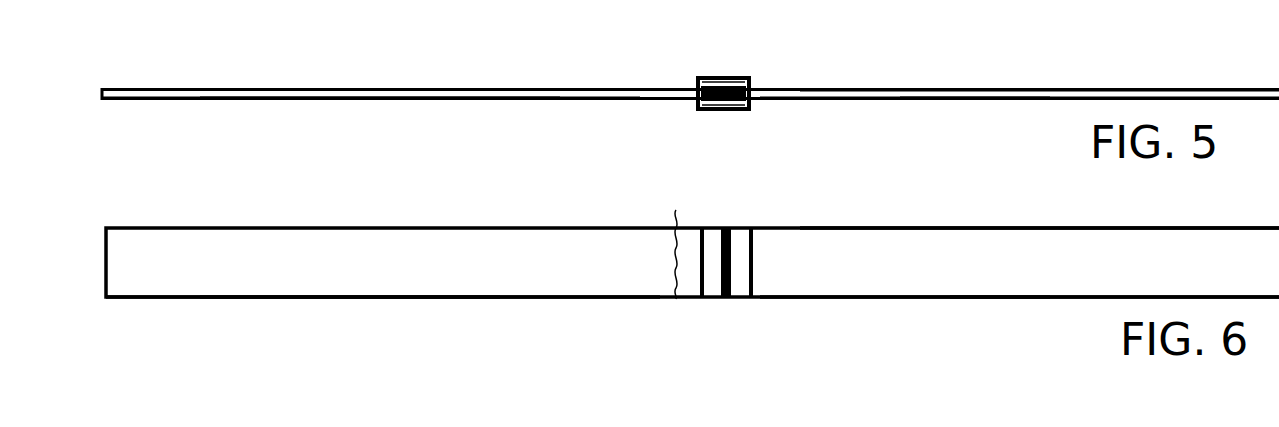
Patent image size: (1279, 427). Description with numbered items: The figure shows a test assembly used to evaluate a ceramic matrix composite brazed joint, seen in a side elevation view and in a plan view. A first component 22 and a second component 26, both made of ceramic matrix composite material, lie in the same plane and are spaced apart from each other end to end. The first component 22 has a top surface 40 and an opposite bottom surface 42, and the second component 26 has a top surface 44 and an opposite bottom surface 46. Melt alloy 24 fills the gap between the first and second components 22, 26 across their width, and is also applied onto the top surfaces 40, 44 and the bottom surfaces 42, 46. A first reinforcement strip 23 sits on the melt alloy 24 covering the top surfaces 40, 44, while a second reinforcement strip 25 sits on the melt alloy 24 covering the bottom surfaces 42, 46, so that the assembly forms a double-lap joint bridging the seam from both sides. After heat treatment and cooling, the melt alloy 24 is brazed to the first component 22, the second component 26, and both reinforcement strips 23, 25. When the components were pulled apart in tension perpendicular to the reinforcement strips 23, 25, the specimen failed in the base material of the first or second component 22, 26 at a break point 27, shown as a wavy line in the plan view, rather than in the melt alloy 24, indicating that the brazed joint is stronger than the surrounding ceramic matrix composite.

In FIG. 5, the first component 22 is at (433, 102).
In FIG. 6, the first component 22 is at (421, 280).
In FIG. 5, the first reinforcement strip 23 is at (723, 113).
In FIG. 5, the melt alloy 24 is at (697, 84).
In FIG. 6, the melt alloy 24 is at (725, 299).
In FIG. 5, the second reinforcement strip 25 is at (722, 78).
In FIG. 5, the second component 26 is at (875, 102).
In FIG. 6, the second component 26 is at (877, 278).
In FIG. 6, the break point 27 is at (676, 300).
In FIG. 5, the top surface 40 is at (333, 87).
In FIG. 6, the top surface 40 is at (248, 244).
In FIG. 5, the bottom surface 42 is at (497, 102).
In FIG. 6, the bottom surface 42 is at (235, 299).
In FIG. 5, the top surface 44 is at (997, 88).
In FIG. 6, the top surface 44 is at (1034, 245).
In FIG. 5, the bottom surface 46 is at (977, 102).
In FIG. 6, the bottom surface 46 is at (1027, 300).